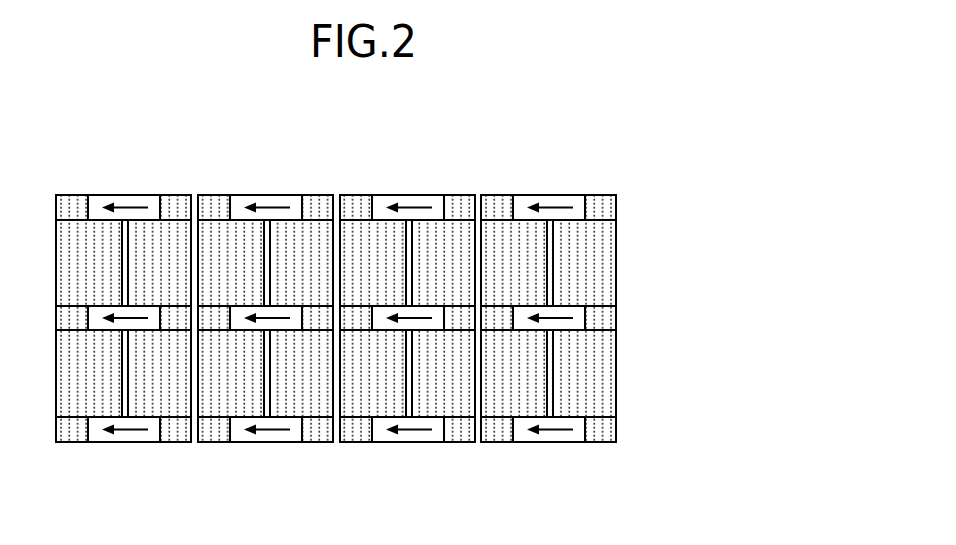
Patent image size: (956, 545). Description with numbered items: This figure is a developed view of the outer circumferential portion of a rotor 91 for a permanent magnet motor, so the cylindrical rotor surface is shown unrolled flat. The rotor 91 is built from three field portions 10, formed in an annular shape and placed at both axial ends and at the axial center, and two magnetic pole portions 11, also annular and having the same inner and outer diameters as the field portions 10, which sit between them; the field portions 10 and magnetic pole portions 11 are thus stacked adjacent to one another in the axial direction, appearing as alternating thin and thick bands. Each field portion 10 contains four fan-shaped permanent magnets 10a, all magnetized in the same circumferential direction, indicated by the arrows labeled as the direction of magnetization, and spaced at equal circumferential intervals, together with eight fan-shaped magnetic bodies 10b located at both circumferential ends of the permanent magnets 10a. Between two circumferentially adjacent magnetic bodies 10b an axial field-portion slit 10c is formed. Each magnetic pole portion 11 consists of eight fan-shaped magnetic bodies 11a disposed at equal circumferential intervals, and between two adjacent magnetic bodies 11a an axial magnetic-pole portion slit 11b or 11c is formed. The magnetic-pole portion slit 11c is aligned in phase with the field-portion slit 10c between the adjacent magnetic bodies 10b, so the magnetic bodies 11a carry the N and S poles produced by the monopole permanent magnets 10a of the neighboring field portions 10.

The rotor 91 is at (688, 138).
The field portion 10 is at (55, 195).
The permanent magnet 10a is at (123, 202).
The magnetic body 10b is at (212, 200).
The field-portion slit 10c is at (337, 198).
The magnetic pole portion 11 is at (55, 221).
The magnetic body 11a is at (598, 397).
The magnetic-pole portion slit 11b is at (406, 408).
The magnetic-pole portion slit 11c is at (194, 405).